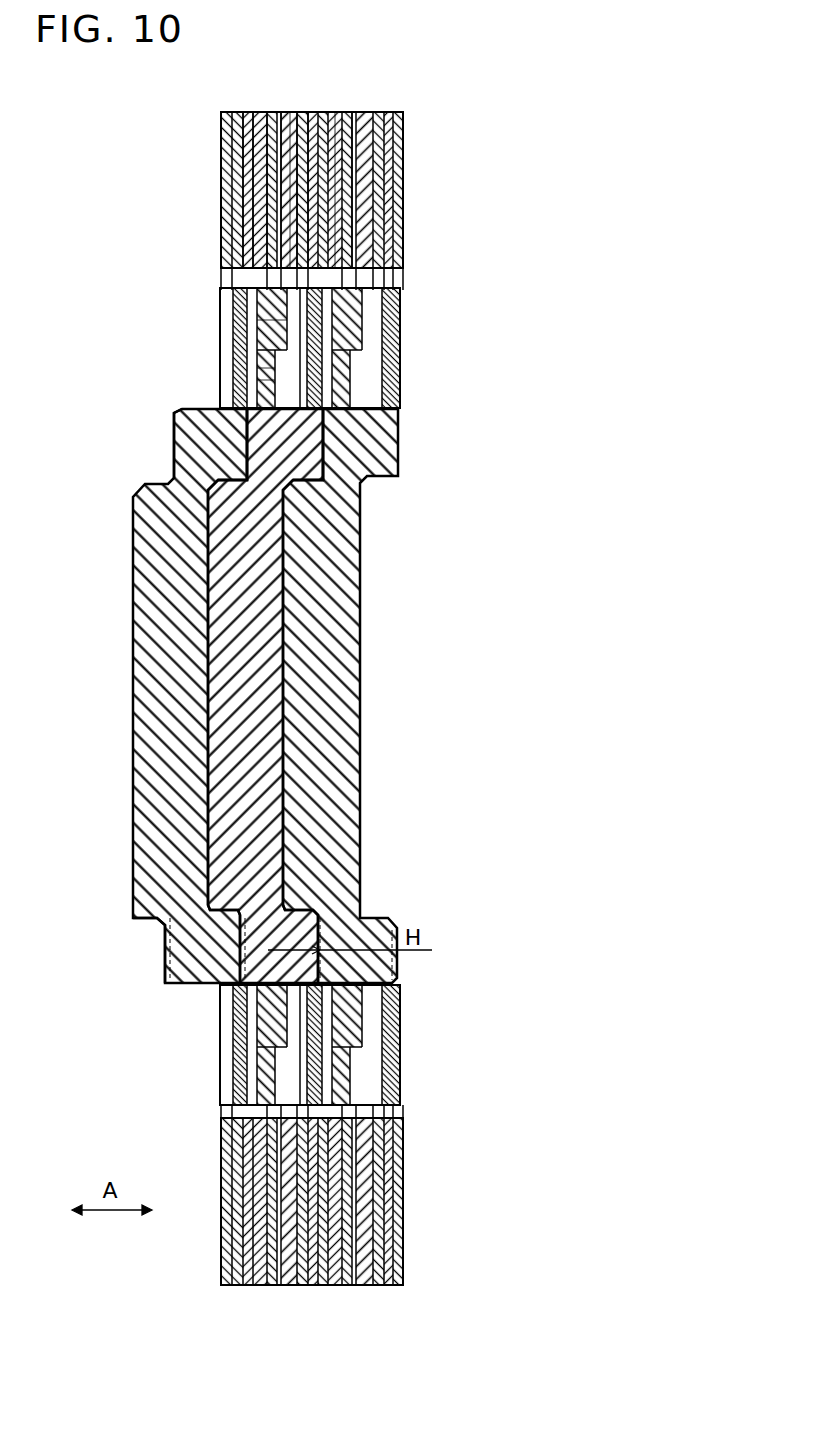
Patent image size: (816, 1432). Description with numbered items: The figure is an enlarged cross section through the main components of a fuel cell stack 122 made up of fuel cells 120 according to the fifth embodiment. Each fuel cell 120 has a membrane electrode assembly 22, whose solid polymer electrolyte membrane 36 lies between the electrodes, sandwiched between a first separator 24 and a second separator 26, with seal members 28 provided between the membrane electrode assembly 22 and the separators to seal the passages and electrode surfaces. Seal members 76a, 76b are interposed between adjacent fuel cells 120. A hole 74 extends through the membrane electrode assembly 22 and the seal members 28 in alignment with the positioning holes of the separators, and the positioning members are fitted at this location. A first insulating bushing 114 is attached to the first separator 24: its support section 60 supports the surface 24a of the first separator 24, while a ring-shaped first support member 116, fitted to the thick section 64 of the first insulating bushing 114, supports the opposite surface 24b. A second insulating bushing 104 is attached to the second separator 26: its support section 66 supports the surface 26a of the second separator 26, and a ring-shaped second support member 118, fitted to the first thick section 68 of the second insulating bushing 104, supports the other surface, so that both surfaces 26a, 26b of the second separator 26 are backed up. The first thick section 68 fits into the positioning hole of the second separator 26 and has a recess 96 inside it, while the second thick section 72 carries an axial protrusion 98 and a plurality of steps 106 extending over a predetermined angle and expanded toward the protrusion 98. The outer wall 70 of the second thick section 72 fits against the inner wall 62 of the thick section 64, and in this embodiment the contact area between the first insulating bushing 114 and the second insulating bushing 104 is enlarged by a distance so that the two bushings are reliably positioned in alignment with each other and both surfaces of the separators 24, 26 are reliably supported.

The fuel cell stack 122 is at (83, 125).
The fuel cell 120 is at (348, 44).
The first separator 24 is at (270, 104).
The membrane electrode assembly 22 is at (289, 104).
The second separator 26 is at (309, 104).
The seal member 76a is at (244, 151).
The seal member 28 is at (292, 172).
The seal member 76b is at (258, 205).
The hole 74 is at (240, 283).
The solid polymer electrolyte membrane 36 is at (352, 147).
The support section 60 is at (372, 285).
The support section 66 is at (346, 315).
The first support member 116 is at (262, 298).
The first insulating bushing 114 is at (268, 332).
The second support member 118 is at (268, 368).
The thick section 64 is at (260, 377).
The outer wall 70 is at (205, 408).
The second thick section 72 is at (182, 435).
The inner wall 62 is at (255, 445).
The first thick section 68 is at (320, 425).
The second insulating bushing 104 is at (363, 575).
The protrusion 98 is at (210, 607).
The recess 96 is at (210, 633).
The steps 106 is at (168, 968).
The surface of the second separator 26a is at (268, 1071).
The surface of the second separator 26b is at (346, 1075).
The surface of the first separator 24b is at (312, 1099).
The surface of the first separator 24a is at (350, 1119).